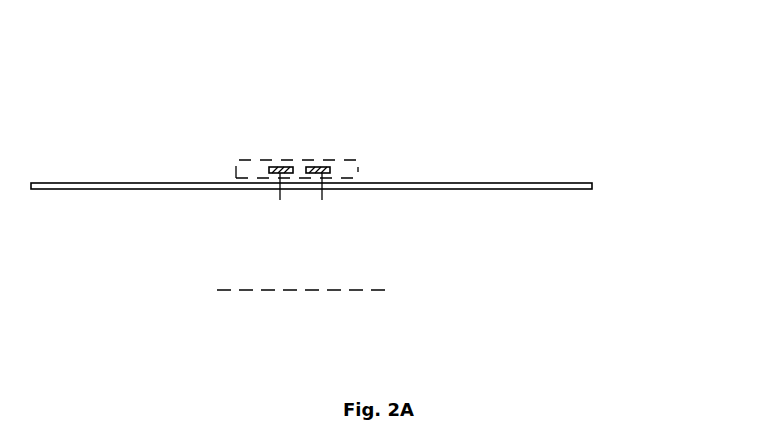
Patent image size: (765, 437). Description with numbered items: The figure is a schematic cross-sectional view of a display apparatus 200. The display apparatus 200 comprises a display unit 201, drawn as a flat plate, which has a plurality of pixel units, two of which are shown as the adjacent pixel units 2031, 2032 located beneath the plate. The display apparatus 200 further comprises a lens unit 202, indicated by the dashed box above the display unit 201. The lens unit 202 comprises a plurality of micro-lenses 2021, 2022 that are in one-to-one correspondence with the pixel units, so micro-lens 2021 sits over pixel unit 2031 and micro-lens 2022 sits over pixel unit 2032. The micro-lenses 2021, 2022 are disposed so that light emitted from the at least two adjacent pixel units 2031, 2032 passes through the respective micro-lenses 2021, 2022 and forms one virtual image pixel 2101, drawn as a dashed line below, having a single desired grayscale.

The display apparatus 200 is at (180, 46).
The display unit 201 is at (552, 190).
The lens unit 202 is at (355, 166).
The micro-lens 2021 is at (279, 167).
The micro-lens 2022 is at (325, 167).
The pixel unit 2031 is at (280, 200).
The pixel unit 2032 is at (322, 200).
The virtual image pixel 2101 is at (378, 290).